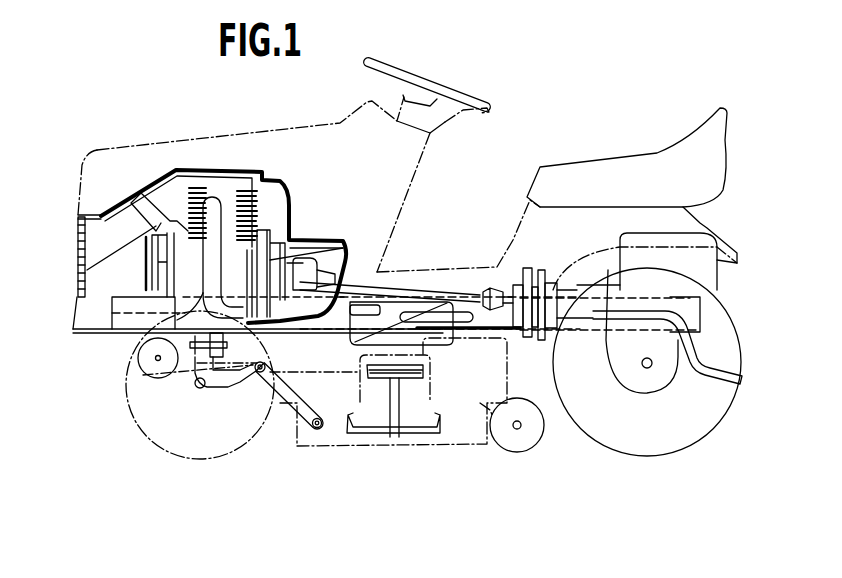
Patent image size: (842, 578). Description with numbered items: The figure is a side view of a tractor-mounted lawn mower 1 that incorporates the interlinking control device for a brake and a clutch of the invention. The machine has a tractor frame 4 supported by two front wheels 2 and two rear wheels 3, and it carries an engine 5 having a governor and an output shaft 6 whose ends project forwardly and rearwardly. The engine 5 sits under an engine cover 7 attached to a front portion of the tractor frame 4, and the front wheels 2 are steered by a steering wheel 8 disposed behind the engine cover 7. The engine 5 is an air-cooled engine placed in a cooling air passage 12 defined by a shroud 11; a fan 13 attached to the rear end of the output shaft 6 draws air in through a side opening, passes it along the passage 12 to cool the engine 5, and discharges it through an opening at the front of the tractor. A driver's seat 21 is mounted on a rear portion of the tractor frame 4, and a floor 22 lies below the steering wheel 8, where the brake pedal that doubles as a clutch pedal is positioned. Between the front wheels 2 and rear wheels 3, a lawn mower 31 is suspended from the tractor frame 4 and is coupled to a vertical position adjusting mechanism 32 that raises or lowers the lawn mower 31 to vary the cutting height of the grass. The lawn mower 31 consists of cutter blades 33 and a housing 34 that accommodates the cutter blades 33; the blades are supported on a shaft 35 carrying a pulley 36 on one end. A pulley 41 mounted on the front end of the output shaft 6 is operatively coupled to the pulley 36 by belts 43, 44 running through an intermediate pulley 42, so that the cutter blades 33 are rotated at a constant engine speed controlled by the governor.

The tractor-mounted lawn mower 1 is at (180, 122).
The front wheels 2 is at (135, 412).
The rear wheels 3 is at (737, 347).
The tractor frame 4 is at (108, 308).
The engine 5 is at (187, 188).
The output shaft 6 is at (173, 217).
The engine cover 7 is at (325, 125).
The steering wheel 8 is at (437, 80).
The shroud 11 is at (277, 193).
The cooling air passage 12 is at (273, 200).
The fan 13 is at (277, 233).
The driver's seat 21 is at (605, 160).
The floor 22 is at (415, 275).
The lawn mower 31 is at (310, 453).
The vertical position adjusting mechanism 32 is at (230, 389).
The cutter blades 33 is at (440, 430).
The housing 34 is at (360, 447).
The shaft 35 is at (403, 415).
The pulley 36 is at (413, 367).
The pulley 41 is at (143, 263).
The intermediate pulley 42 is at (140, 375).
The belt 43 is at (115, 333).
The belt 44 is at (302, 373).